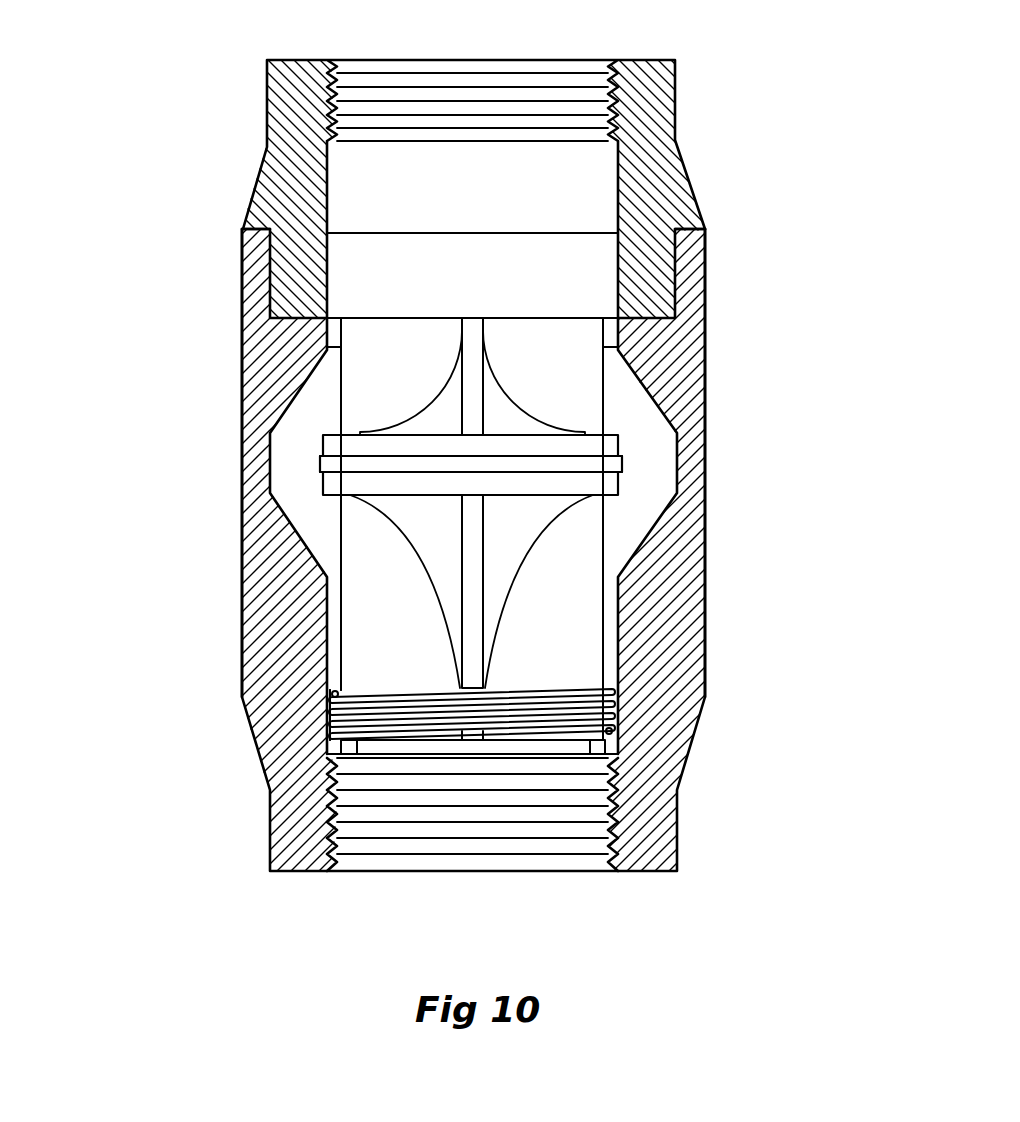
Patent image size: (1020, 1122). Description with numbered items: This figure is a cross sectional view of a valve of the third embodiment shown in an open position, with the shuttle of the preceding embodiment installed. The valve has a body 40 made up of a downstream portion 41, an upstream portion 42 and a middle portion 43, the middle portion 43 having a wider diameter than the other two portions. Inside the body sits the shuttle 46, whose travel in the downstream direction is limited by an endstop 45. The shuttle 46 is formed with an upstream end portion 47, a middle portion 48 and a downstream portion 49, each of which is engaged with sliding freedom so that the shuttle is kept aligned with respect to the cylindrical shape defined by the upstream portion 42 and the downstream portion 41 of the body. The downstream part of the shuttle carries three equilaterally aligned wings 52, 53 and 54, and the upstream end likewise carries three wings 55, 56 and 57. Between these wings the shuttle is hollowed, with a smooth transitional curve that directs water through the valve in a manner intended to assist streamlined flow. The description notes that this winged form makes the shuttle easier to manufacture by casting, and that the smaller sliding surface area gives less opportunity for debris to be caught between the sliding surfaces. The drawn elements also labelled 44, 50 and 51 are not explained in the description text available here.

The body 40 is at (660, 683).
The downstream portion 41 is at (683, 578).
The upstream portion 42 is at (620, 205).
The middle portion 43 is at (650, 450).
The cartridge sleeve wall 44 is at (330, 637).
The endstop 45 is at (151, 463).
The shuttle 46 is at (367, 372).
The upstream end portion 47 is at (567, 363).
The middle portion 48 is at (320, 480).
The downstream portion 49 is at (377, 592).
The body top lip 50 is at (250, 218).
The lower threaded bore 51 is at (657, 767).
The wing 52 is at (480, 623).
The wing 53 is at (337, 668).
The wing 54 is at (603, 608).
The wing 55 is at (322, 357).
The wing 56 is at (603, 347).
The wing 57 is at (470, 365).